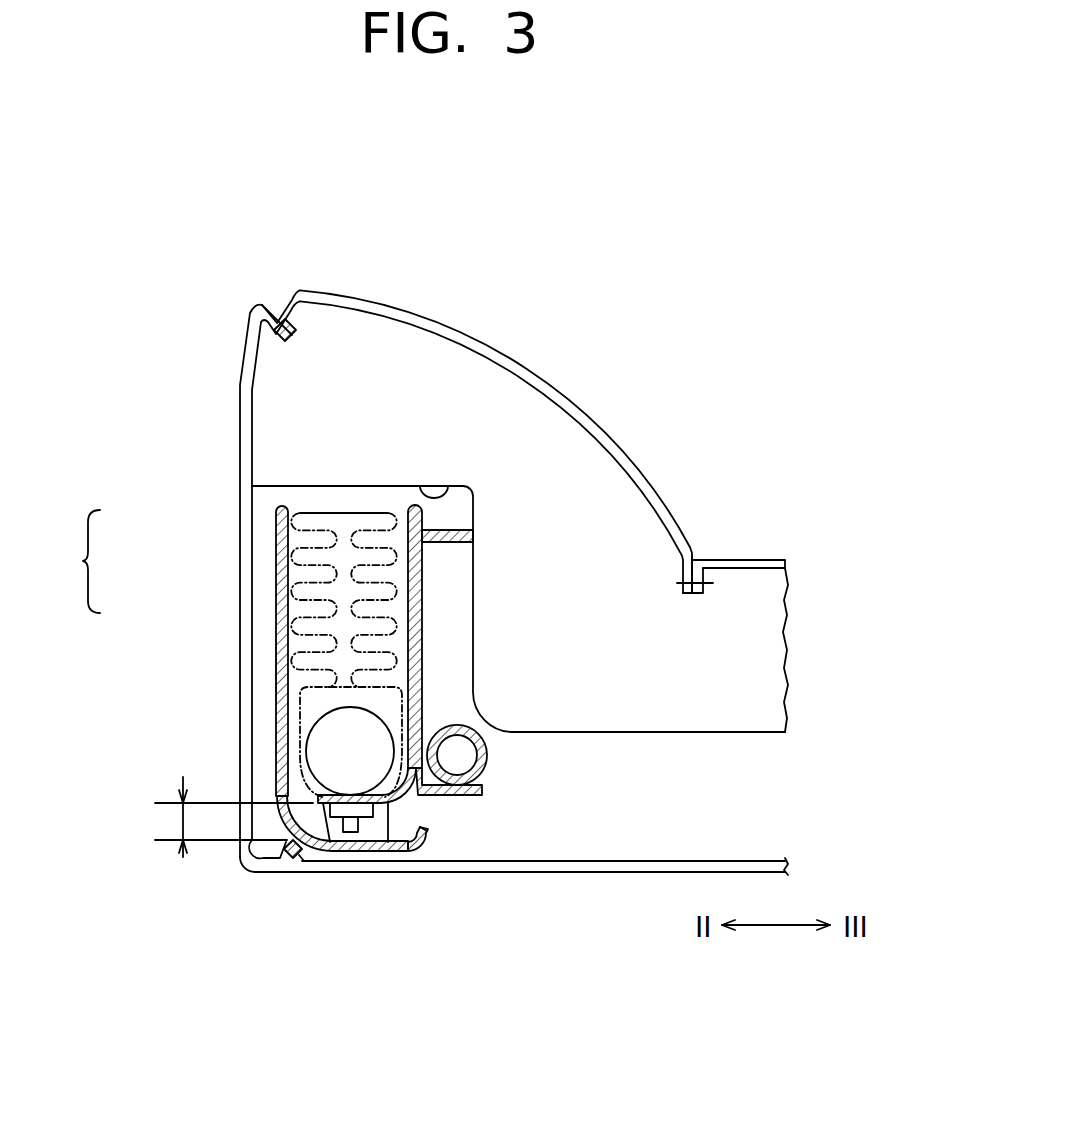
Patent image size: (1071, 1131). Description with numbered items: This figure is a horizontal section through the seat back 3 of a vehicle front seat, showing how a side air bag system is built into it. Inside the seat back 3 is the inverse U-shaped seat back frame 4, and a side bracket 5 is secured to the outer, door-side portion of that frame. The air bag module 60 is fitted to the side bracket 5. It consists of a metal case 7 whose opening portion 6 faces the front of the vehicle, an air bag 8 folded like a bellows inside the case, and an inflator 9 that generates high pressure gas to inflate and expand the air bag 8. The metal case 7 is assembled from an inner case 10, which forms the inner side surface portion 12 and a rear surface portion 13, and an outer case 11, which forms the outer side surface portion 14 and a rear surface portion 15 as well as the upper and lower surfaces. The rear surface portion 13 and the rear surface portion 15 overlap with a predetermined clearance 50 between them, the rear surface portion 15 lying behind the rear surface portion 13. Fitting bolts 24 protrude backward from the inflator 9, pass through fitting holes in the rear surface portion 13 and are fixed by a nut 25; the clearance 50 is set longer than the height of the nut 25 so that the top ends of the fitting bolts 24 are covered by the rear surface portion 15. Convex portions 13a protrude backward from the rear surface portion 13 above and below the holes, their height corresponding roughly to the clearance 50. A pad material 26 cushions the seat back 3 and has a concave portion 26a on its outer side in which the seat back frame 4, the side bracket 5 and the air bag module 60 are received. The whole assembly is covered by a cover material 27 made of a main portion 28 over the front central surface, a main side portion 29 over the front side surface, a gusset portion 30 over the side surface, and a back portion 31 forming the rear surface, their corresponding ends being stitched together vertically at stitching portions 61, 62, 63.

The seat back 3 is at (582, 232).
The seat back frame 4 is at (485, 772).
The side bracket 5 is at (427, 703).
The opening portion 6 is at (345, 497).
The metal case 7 is at (80, 561).
The air bag 8 is at (308, 510).
The inflator 9 is at (320, 750).
The inner case 10 is at (403, 575).
The outer case 11 is at (274, 615).
The inner side surface portion 12 is at (404, 615).
The rear surface portion of the inner case 13 is at (383, 852).
The convex portions 13a is at (418, 852).
The outer side surface portion 14 is at (298, 710).
The rear surface portion of the outer case 15 is at (428, 834).
The fitting bolts 24 is at (352, 833).
The nut 25 is at (322, 806).
The pad material 26 is at (513, 443).
The concave portion 26a is at (420, 486).
The cover material 27 is at (687, 471).
The main portion 28 is at (767, 555).
The main side portion 29 is at (597, 423).
The gusset portion 30 is at (241, 405).
The back portion 31 is at (590, 875).
The clearance 50 is at (183, 820).
The air bag module 60 is at (274, 670).
The stitching portion 61 is at (698, 555).
The stitching portion 62 is at (270, 313).
The stitching portion 63 is at (268, 866).